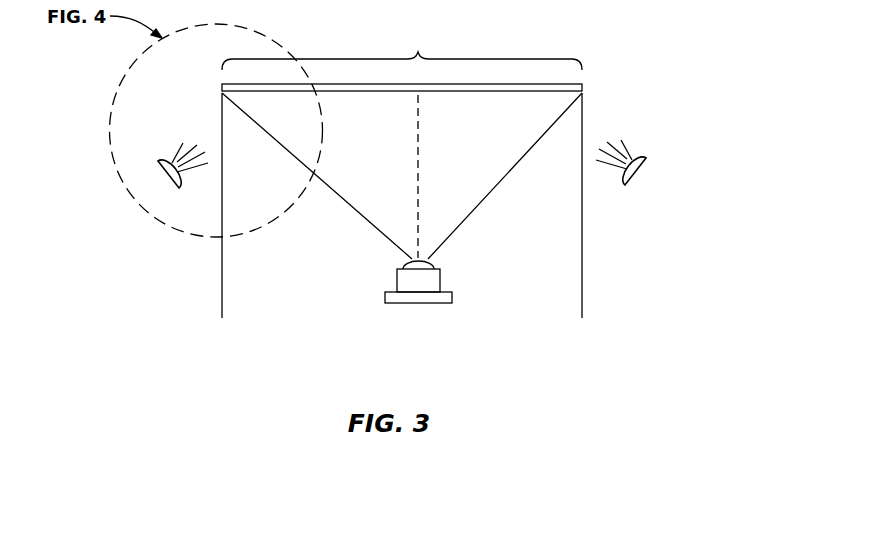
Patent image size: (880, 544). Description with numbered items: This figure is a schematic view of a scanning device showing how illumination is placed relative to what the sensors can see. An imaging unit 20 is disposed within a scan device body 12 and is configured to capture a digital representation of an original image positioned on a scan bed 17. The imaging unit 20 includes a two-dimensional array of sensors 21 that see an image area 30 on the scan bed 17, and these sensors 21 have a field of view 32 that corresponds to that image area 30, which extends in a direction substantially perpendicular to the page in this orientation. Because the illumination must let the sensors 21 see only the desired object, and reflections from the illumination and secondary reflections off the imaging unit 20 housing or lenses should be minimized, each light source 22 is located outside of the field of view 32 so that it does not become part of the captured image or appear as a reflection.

The scan device body 12 is at (695, 88).
The scan bed 17 is at (585, 88).
The imaging unit 20 is at (380, 298).
The sensors 21 is at (452, 297).
The light source 22 is at (156, 182).
The image area 30 is at (402, 47).
The field of view 32 is at (484, 200).